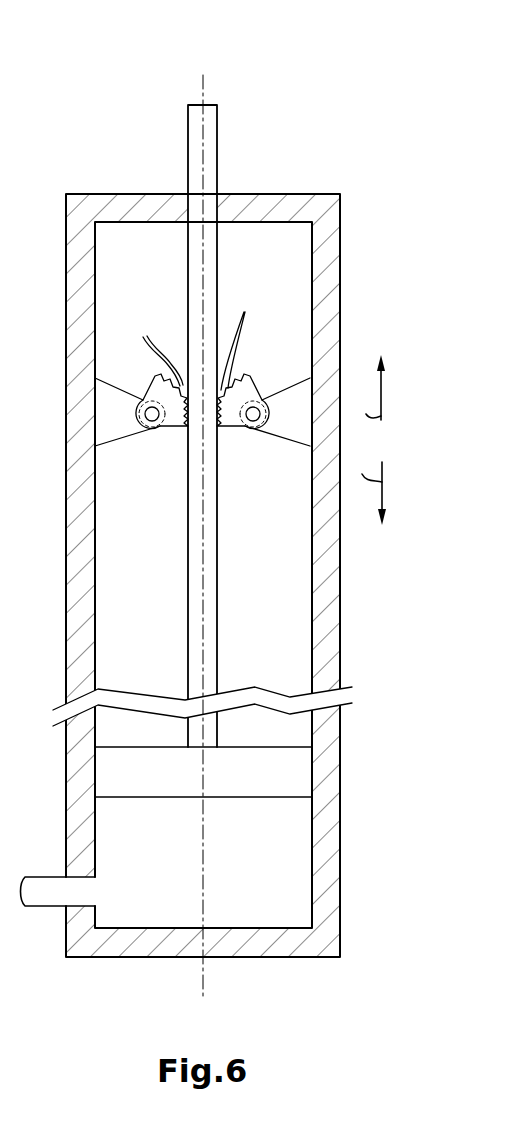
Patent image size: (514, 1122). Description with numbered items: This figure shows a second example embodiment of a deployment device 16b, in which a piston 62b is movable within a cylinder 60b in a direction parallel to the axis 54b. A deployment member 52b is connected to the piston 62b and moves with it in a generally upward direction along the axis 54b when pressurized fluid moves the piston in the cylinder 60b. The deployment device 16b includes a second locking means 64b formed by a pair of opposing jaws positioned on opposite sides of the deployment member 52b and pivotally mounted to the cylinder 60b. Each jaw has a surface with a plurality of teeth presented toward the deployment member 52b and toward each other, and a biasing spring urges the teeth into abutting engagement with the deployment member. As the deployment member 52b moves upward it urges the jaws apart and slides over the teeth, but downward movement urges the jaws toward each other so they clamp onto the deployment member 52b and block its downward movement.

The deployment device 16b is at (213, 536).
The deployment member 52b is at (208, 604).
The axis 54b is at (203, 985).
The cylinder 60b is at (322, 630).
The piston 62b is at (283, 777).
The locking means 64b is at (202, 401).